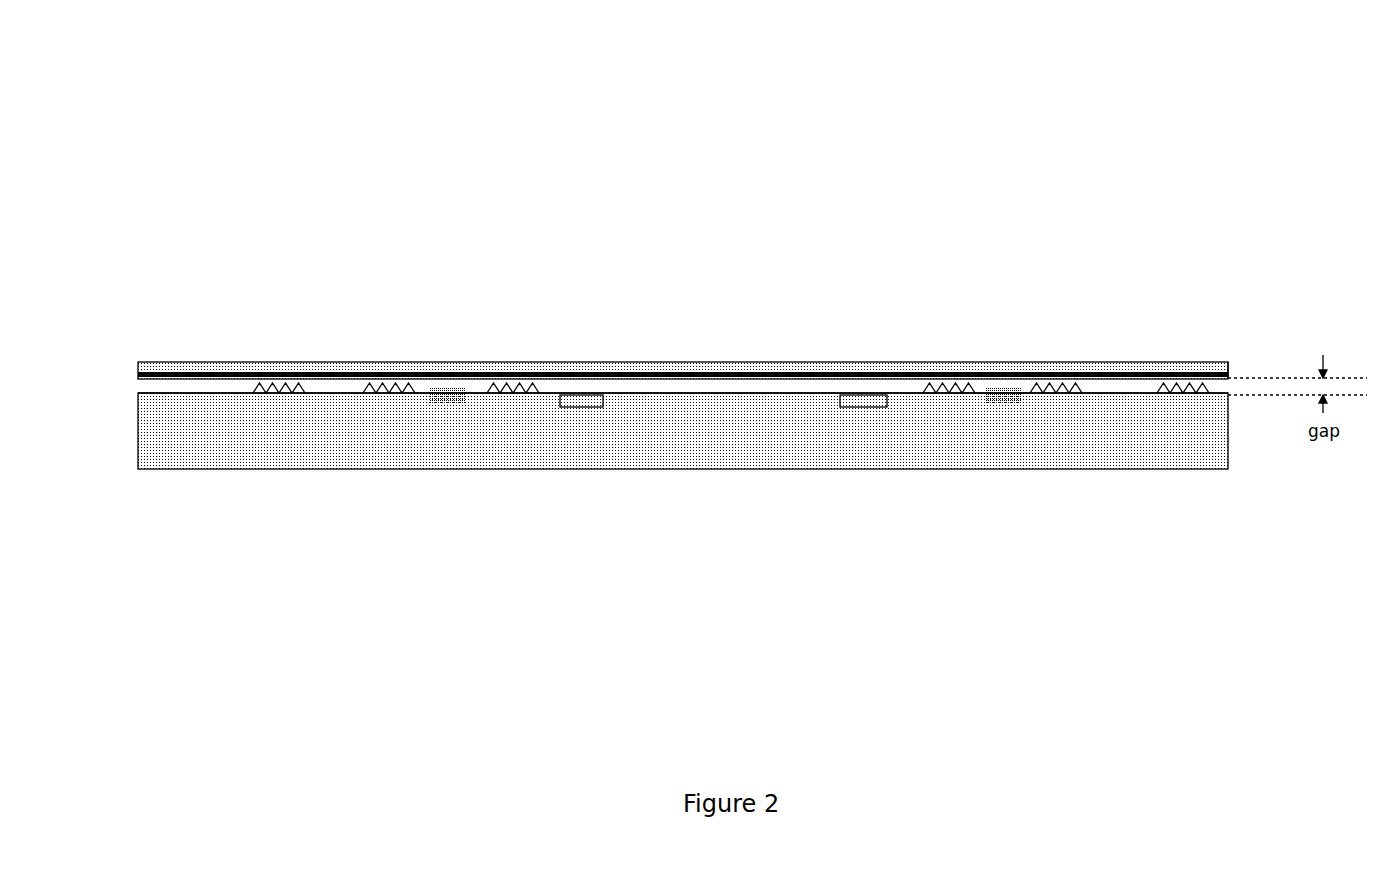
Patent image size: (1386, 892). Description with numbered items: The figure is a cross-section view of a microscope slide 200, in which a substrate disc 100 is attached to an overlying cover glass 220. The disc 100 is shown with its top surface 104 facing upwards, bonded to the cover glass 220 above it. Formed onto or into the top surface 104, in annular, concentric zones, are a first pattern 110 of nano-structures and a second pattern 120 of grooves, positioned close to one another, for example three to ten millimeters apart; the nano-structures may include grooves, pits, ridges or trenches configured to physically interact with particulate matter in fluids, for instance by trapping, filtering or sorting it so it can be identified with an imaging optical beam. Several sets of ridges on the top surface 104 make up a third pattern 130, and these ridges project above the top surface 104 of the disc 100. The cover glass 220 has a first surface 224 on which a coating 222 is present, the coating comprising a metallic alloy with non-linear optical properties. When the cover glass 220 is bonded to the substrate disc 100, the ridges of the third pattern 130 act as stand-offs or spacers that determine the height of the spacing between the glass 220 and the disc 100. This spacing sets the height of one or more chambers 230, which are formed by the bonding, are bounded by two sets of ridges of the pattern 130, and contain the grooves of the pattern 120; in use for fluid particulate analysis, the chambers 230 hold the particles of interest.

The substrate disc 100 is at (989, 449).
The top surface 104 is at (1128, 395).
The first pattern of nano-structures 110 is at (998, 390).
The second pattern of grooves 120 is at (863, 407).
The third pattern of ridges 130 is at (293, 378).
The microscope slide 200 is at (262, 125).
The cover glass 220 is at (677, 370).
The coating 222 is at (722, 378).
The first surface 224 is at (1229, 377).
The chambers 230 is at (465, 390).